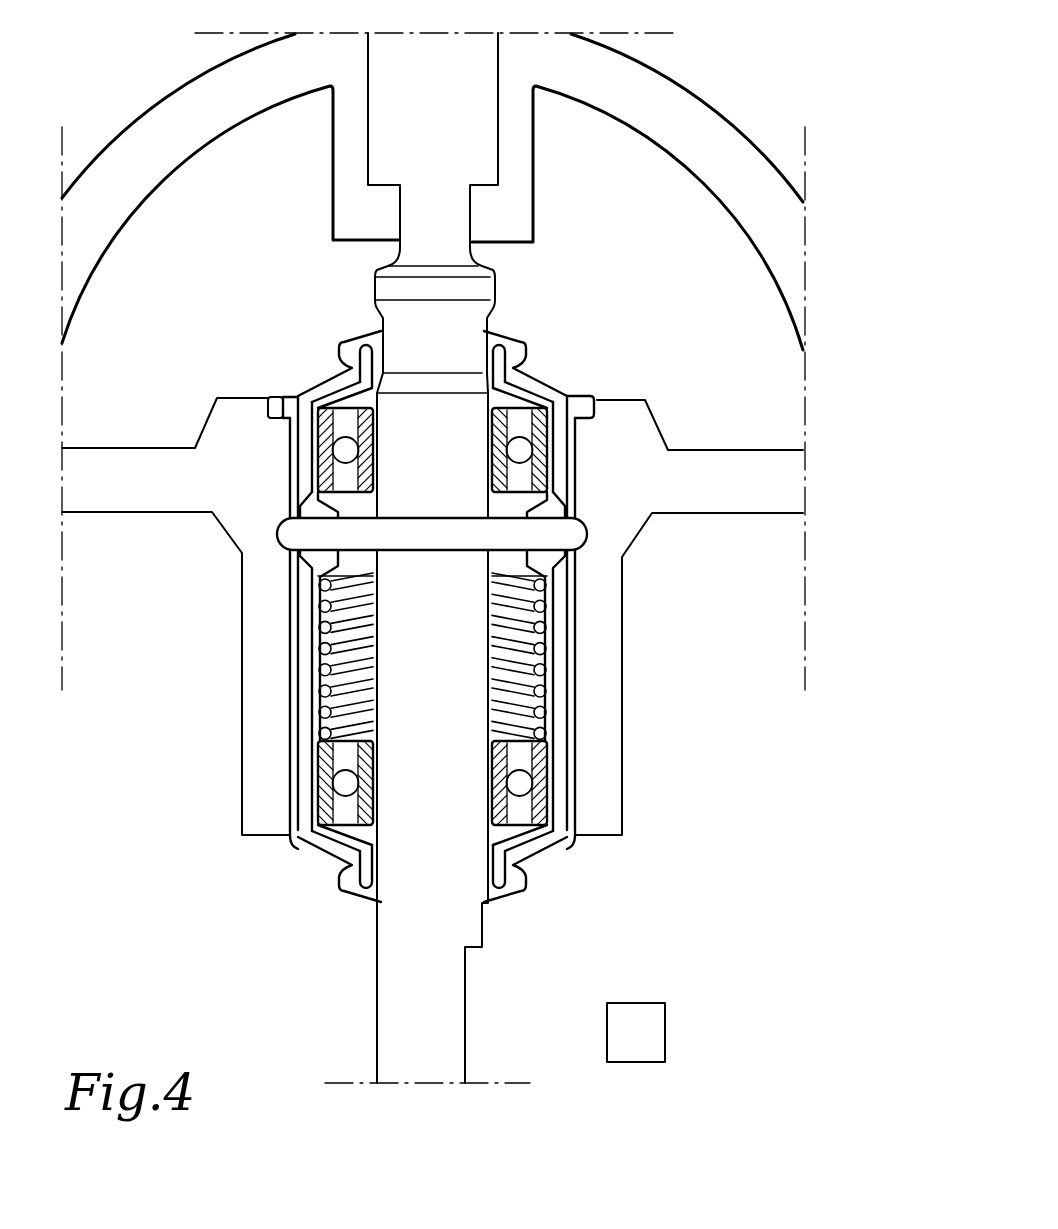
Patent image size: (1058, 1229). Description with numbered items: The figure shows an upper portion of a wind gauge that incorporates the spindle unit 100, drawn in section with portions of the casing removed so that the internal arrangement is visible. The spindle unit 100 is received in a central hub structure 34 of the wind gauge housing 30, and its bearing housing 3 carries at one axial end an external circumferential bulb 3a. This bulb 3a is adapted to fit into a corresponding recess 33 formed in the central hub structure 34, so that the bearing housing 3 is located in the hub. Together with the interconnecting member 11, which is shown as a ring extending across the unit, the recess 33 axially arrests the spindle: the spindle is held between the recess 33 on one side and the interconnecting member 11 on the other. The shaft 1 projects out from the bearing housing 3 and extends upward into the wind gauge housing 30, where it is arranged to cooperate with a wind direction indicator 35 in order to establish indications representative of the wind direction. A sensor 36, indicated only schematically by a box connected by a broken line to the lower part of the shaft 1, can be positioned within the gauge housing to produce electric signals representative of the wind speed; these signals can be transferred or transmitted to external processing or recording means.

The shaft 1 is at (423, 216).
The bearing housing 3 is at (480, 580).
The external circumferential bulb 3a is at (580, 394).
The interconnecting member 11 is at (317, 534).
The wind gauge housing 30 is at (438, 426).
The recess 33 is at (280, 395).
The central hub structure 34 is at (232, 408).
The wind direction indicator 35 is at (513, 213).
The sensor 36 is at (605, 1035).
The spindle unit 100 is at (480, 626).